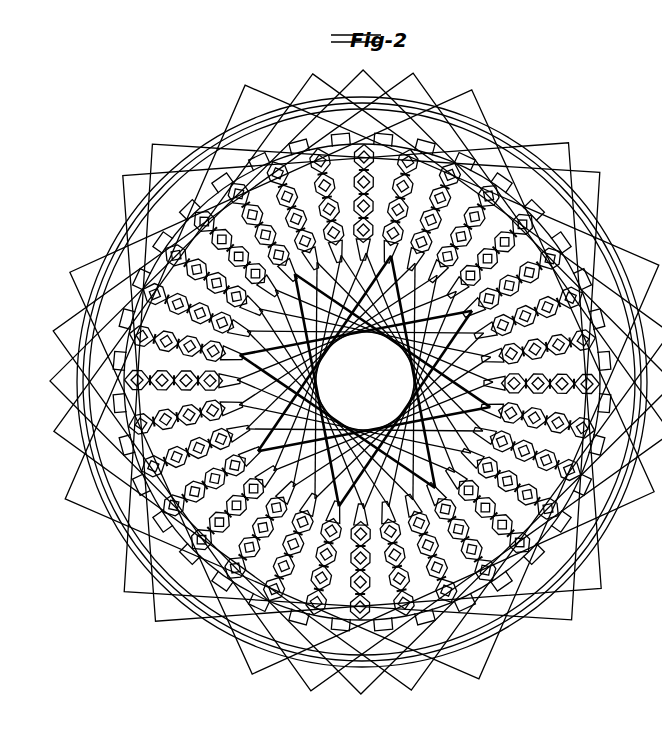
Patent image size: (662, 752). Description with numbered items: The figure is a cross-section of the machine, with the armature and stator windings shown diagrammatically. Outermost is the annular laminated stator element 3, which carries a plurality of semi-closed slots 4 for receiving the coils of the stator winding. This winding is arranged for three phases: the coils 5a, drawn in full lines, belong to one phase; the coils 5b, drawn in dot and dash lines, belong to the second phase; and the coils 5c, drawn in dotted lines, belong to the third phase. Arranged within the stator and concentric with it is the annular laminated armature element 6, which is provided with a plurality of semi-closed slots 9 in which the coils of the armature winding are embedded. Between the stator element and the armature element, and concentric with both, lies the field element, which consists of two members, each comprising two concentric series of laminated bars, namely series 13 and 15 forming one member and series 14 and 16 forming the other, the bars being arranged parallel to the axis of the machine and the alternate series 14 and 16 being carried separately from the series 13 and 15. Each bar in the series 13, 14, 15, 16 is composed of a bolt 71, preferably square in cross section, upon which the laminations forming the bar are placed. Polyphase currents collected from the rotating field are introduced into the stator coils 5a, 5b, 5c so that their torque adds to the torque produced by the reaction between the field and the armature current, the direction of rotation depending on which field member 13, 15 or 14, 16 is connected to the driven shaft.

The laminated stator element 3 is at (167, 214).
The semi-closed slots 4 is at (162, 251).
The stator coils of the first phase 5a is at (411, 76).
The stator coils of the second phase 5b is at (300, 96).
The stator coils of the third phase 5c is at (200, 118).
The laminated armature element 6 is at (369, 437).
The semi-closed slots 9 is at (393, 347).
The series of laminated bars 13 is at (110, 558).
The series of laminated bars 14 is at (50, 448).
The series of laminated bars 15 is at (85, 540).
The series of laminated bars 16 is at (60, 476).
The bolt 71 is at (314, 408).